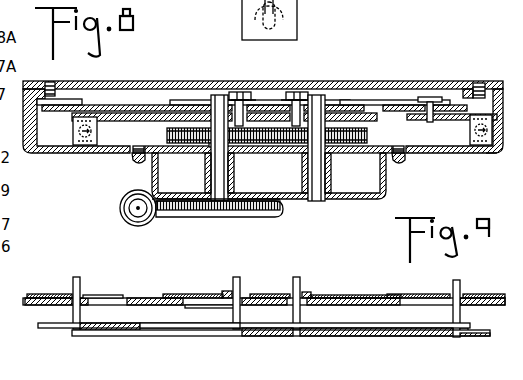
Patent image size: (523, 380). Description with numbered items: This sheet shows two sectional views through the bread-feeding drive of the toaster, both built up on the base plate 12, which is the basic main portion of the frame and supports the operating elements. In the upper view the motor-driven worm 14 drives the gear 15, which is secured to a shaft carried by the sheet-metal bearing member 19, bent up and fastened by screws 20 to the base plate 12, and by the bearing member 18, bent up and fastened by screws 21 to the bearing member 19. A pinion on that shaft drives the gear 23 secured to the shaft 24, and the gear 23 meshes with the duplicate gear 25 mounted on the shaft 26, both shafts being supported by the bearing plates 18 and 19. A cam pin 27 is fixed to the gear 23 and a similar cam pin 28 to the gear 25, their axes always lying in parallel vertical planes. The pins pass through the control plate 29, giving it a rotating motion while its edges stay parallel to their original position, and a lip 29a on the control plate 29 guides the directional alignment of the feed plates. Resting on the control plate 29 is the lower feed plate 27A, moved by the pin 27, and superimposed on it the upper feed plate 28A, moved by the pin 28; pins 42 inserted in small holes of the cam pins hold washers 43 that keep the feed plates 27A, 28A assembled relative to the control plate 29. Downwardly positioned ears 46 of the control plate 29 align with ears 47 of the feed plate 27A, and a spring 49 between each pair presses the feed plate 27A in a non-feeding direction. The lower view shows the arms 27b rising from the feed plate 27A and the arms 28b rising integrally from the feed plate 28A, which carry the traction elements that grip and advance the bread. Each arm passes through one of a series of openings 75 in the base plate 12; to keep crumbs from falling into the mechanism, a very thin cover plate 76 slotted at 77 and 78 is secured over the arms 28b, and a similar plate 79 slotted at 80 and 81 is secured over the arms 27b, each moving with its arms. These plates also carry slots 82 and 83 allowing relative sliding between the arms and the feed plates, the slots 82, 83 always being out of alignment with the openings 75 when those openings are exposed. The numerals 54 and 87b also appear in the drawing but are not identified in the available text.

In FIG. 8, the base plate 12 is at (372, 82).
In FIG. 9, the base plate 12 is at (33, 306).
In FIG. 8, the worm 14 is at (120, 208).
In FIG. 8, the gear 15 is at (285, 210).
In FIG. 8, the bearing member 18 is at (186, 167).
In FIG. 8, the bearing member 19 is at (38, 153).
In FIG. 8, the screws 20 is at (55, 81).
In FIG. 8, the screws 21 is at (133, 165).
In FIG. 8, the gear 23 is at (182, 127).
In FIG. 8, the shaft 24 is at (220, 173).
In FIG. 8, the gear 25 is at (343, 118).
In FIG. 8, the shaft 26 is at (333, 173).
In FIG. 8, the cam pin 27 is at (238, 92).
In FIG. 8, the cam pin 28 is at (295, 93).
In FIG. 8, the feed plate 27A is at (142, 113).
In FIG. 9, the feed plate 27A is at (367, 340).
In FIG. 8, the feed plate 28A is at (118, 105).
In FIG. 9, the feed plate 28A is at (88, 331).
In FIG. 8, the control plate 29 is at (147, 124).
In FIG. 8, the lip 29a is at (430, 96).
In FIG. 8, the pins 42 is at (250, 93).
In FIG. 8, the washers 43 is at (228, 100).
In FIG. 8, the ears 46 is at (476, 150).
In FIG. 8, the ears 47 is at (74, 128).
In FIG. 8, the spring 49 is at (490, 155).
In FIG. 8, the indicator housing 54 is at (291, 20).
In FIG. 9, the openings 75 is at (126, 305).
In FIG. 9, the cover plate 76 is at (45, 295).
In FIG. 9, the slot 77 is at (83, 297).
In FIG. 9, the slot 78 is at (307, 295).
In FIG. 9, the plate 79 is at (203, 295).
In FIG. 9, the slot 80 is at (244, 292).
In FIG. 9, the slot 81 is at (465, 295).
In FIG. 9, the slot 82 is at (160, 295).
In FIG. 9, the slot 83 is at (347, 297).
In FIG. 9, the arms 27b is at (237, 277).
In FIG. 9, the arms 28b is at (77, 277).
In FIG. 9, the pin 87b is at (453, 284).